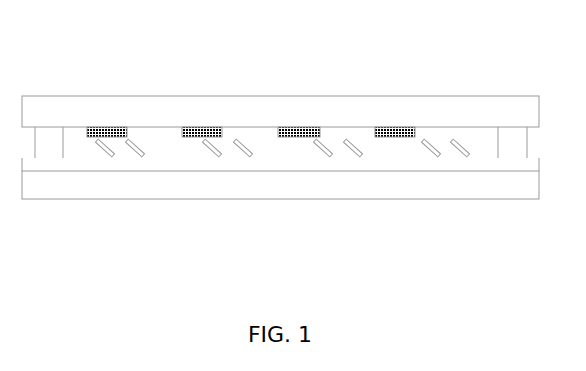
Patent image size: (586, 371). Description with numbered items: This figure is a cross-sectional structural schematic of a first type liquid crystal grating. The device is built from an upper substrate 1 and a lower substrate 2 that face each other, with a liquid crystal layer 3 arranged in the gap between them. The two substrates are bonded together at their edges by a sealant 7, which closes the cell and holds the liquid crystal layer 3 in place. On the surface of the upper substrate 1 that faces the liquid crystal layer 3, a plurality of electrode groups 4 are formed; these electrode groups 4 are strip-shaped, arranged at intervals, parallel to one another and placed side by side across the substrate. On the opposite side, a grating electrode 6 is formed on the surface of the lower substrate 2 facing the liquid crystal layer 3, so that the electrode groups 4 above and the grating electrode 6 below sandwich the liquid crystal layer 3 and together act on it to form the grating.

The upper substrate 1 is at (455, 107).
The lower substrate 2 is at (313, 187).
The liquid crystal layer 3 is at (435, 155).
The electrode group 4 is at (118, 127).
The grating electrode 6 is at (375, 163).
The sealant 7 is at (50, 137).